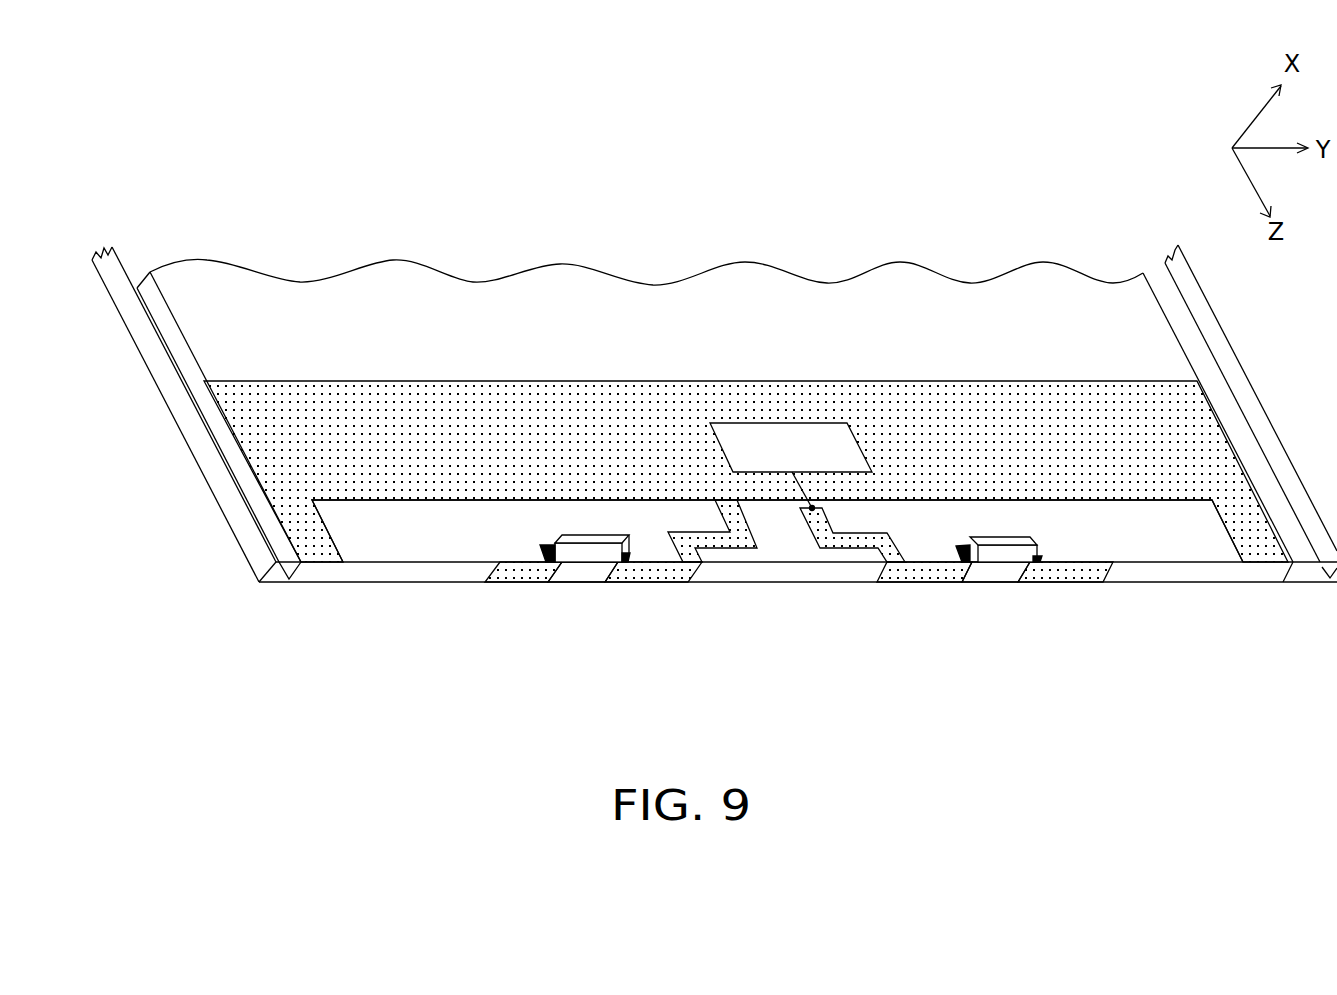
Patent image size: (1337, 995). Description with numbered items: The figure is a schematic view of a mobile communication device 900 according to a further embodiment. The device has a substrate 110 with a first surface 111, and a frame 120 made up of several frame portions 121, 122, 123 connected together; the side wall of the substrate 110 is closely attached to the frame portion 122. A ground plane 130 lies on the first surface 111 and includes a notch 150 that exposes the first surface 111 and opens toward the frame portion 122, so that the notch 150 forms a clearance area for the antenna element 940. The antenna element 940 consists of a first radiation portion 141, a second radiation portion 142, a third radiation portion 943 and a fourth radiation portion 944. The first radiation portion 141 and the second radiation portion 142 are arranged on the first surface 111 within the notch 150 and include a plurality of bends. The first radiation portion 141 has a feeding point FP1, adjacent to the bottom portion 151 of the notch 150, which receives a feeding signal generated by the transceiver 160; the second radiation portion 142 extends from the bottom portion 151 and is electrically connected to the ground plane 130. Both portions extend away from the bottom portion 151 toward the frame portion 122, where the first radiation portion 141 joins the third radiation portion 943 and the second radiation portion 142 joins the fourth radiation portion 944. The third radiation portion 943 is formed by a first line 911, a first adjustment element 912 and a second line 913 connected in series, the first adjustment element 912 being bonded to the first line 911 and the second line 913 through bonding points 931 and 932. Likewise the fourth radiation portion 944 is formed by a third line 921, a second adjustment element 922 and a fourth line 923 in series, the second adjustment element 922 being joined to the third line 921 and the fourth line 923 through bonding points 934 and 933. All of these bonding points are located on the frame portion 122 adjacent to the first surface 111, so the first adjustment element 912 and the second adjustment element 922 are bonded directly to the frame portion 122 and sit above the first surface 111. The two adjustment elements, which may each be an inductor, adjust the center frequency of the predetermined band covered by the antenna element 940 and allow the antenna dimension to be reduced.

The mobile communication device 900 is at (714, 428).
The substrate 110 is at (715, 360).
The first surface 111 is at (1035, 290).
The frame 120 is at (184, 369).
The frame portion 121 is at (244, 538).
The frame portion 122 is at (372, 576).
The frame portion 123 is at (1278, 452).
The ground plane 130 is at (372, 405).
The first radiation portion 141 is at (895, 540).
The second radiation portion 142 is at (720, 542).
The notch 150 is at (798, 573).
The bottom portion 151 is at (1181, 505).
The transceiver 160 is at (863, 447).
The feeding point FP1 is at (818, 510).
The first line 911 is at (936, 575).
The first adjustment element 912 is at (992, 566).
The second line 913 is at (1065, 606).
The third line 921 is at (653, 606).
The second adjustment element 922 is at (584, 565).
The fourth line 923 is at (513, 575).
The bonding point 931 is at (966, 546).
The bonding point 932 is at (1043, 545).
The bonding point 933 is at (635, 548).
The bonding point 934 is at (548, 545).
The antenna element 940 is at (798, 568).
The third radiation portion 943 is at (995, 629).
The fourth radiation portion 944 is at (592, 629).